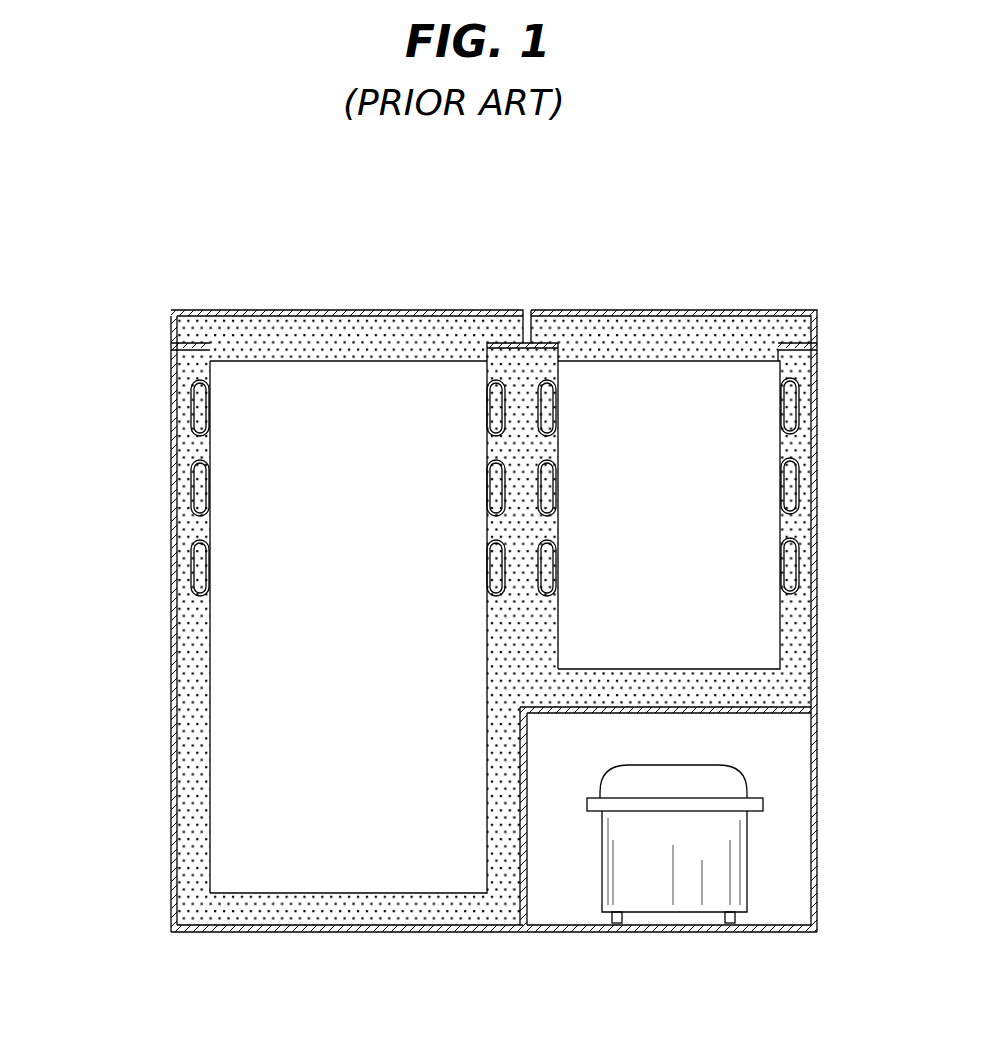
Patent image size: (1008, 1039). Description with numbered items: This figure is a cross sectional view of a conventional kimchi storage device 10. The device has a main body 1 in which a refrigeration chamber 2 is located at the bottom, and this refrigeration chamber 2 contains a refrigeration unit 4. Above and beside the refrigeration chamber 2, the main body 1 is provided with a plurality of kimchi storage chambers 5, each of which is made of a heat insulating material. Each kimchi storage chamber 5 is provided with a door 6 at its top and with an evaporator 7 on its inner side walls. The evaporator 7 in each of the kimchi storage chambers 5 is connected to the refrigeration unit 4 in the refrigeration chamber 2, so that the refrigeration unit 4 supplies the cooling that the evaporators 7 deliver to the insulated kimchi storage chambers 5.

The kimchi storage device 10 is at (486, 610).
The main body 1 is at (413, 395).
The refrigeration chamber 2 is at (713, 867).
The refrigeration unit 4 is at (653, 900).
The kimchi storage chamber 5 is at (328, 325).
The door 6 is at (707, 338).
The evaporator 7 is at (197, 407).